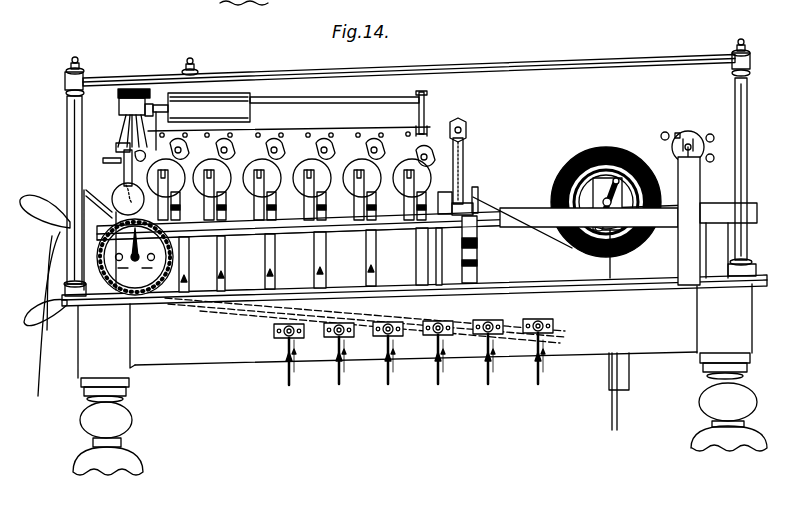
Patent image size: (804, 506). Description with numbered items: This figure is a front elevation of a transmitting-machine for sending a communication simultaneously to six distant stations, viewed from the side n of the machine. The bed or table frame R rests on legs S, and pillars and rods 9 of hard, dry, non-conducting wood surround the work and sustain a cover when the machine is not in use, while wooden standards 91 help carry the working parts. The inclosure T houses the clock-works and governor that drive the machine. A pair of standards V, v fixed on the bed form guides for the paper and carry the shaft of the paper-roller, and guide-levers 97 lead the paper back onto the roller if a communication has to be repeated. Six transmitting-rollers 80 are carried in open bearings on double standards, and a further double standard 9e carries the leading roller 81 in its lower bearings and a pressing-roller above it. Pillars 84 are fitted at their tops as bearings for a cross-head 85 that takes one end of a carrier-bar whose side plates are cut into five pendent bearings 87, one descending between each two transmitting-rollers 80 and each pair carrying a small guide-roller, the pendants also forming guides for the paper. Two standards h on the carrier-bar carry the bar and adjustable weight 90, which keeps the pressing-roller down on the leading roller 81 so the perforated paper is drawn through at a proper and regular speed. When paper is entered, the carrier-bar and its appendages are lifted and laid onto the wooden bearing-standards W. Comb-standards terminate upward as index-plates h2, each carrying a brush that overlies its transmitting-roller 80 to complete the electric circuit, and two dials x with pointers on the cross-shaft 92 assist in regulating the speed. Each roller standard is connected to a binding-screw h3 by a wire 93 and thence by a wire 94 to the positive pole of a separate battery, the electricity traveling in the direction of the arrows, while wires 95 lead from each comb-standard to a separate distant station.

The pillars and rods 9 is at (340, 72).
The standards 91 is at (712, 262).
The cross-shaft 92 is at (575, 202).
The wire 93 is at (436, 230).
The wire 94 is at (418, 363).
The wires 95 is at (393, 235).
The guide-levers 97 is at (619, 330).
The double standard 9e is at (128, 182).
The transmitting-rollers 80 is at (289, 178).
The leading roller 81 is at (145, 165).
The pillars 84 is at (469, 151).
The cross-head 85 is at (116, 147).
The pendent bearings 87 is at (302, 153).
The bar and adjustable weight 90 is at (286, 107).
The side of machine n is at (156, 122).
The standards h is at (298, 206).
The index-plate h2 is at (297, 136).
The binding-screw h3 is at (412, 336).
The bed or table frame R is at (393, 263).
The legs S is at (420, 379).
The inclosure of the clock-works T is at (100, 236).
The standards V is at (689, 221).
The wooden bearing-standards W is at (477, 249).
The dials x is at (135, 257).
The treadle lever v is at (45, 295).